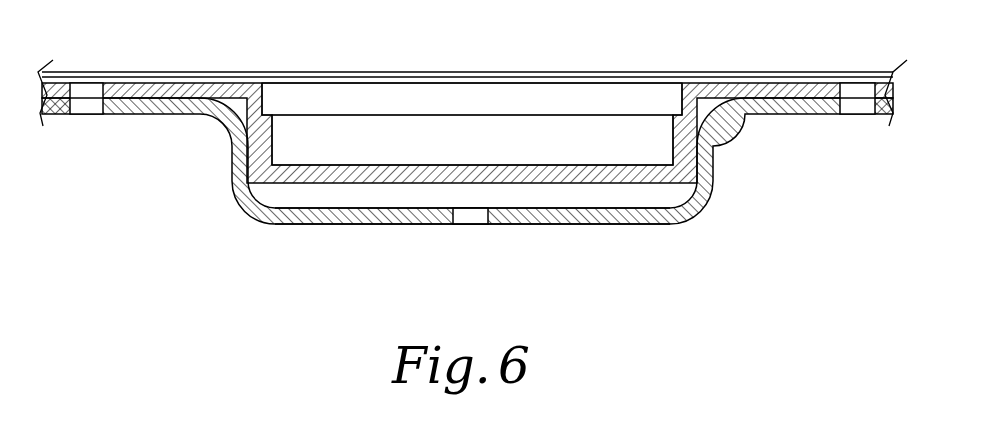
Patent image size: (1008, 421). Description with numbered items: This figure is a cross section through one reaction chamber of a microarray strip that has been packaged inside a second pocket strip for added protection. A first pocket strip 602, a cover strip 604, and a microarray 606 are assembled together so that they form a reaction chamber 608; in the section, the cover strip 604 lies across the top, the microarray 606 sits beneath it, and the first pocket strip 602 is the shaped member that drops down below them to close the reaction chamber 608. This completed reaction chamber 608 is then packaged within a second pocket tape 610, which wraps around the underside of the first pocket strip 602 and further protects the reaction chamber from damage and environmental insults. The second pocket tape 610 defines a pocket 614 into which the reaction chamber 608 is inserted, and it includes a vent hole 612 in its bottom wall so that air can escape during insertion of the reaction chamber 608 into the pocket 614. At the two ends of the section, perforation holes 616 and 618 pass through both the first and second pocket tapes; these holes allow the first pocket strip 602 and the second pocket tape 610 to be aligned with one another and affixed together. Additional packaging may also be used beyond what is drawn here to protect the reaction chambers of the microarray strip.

The first pocket strip 602 is at (732, 88).
The cover strip 604 is at (333, 78).
The microarray 606 is at (523, 103).
The reaction chamber 608 is at (323, 145).
The second pocket tape 610 is at (622, 220).
The vent hole 612 is at (472, 222).
The pocket 614 is at (543, 197).
The perforation hole 616 is at (857, 90).
The perforation hole 618 is at (87, 88).